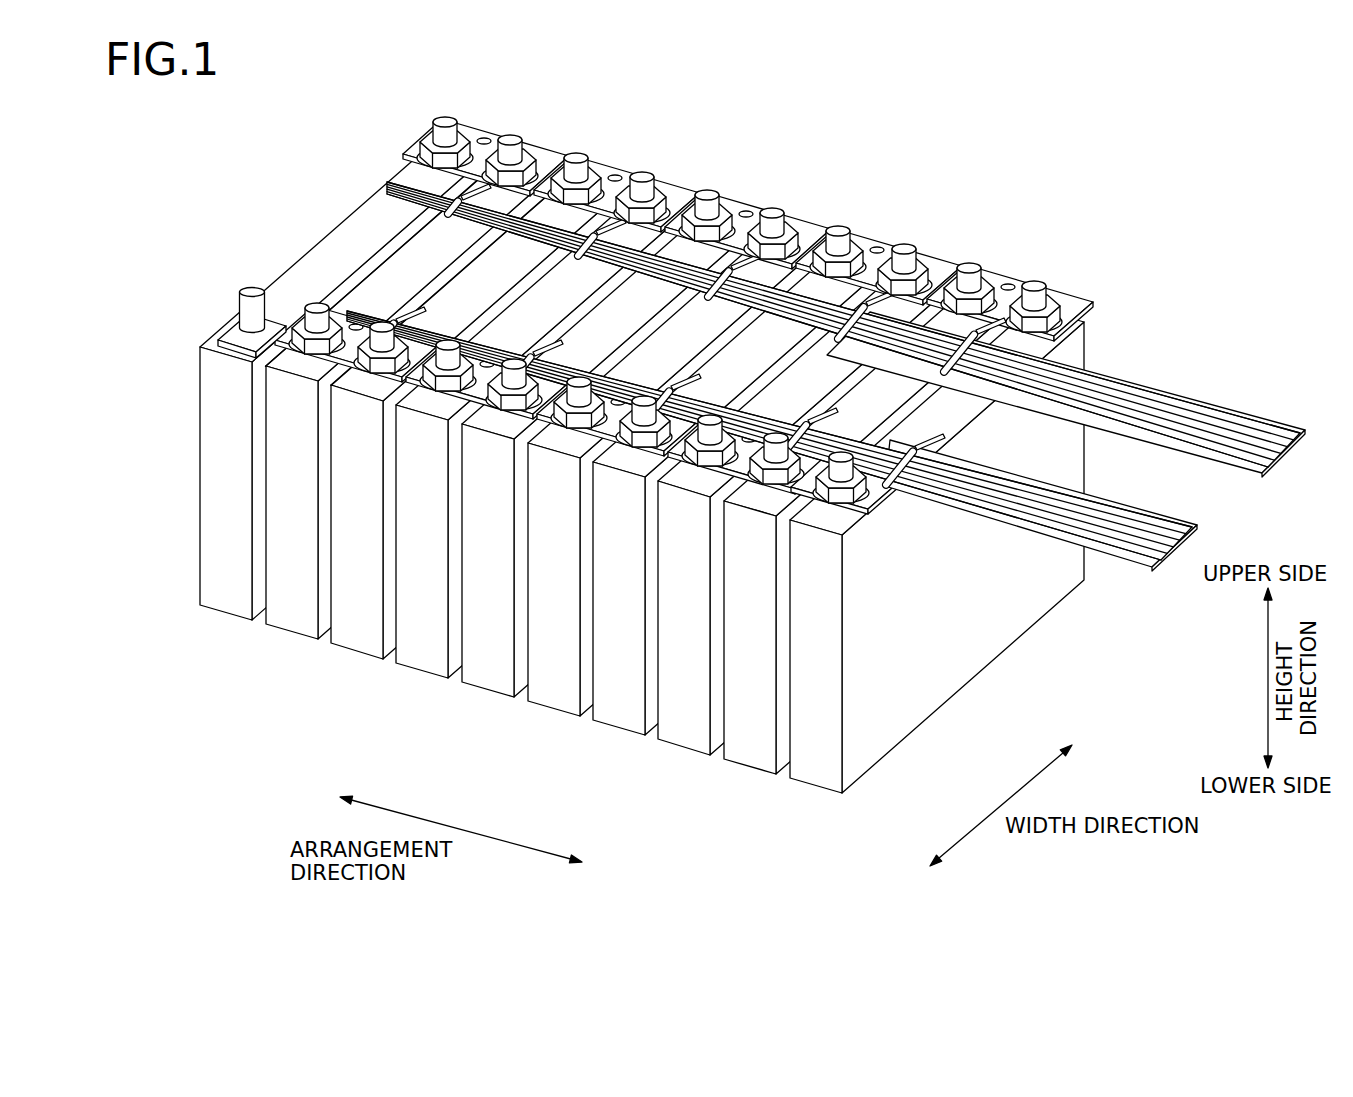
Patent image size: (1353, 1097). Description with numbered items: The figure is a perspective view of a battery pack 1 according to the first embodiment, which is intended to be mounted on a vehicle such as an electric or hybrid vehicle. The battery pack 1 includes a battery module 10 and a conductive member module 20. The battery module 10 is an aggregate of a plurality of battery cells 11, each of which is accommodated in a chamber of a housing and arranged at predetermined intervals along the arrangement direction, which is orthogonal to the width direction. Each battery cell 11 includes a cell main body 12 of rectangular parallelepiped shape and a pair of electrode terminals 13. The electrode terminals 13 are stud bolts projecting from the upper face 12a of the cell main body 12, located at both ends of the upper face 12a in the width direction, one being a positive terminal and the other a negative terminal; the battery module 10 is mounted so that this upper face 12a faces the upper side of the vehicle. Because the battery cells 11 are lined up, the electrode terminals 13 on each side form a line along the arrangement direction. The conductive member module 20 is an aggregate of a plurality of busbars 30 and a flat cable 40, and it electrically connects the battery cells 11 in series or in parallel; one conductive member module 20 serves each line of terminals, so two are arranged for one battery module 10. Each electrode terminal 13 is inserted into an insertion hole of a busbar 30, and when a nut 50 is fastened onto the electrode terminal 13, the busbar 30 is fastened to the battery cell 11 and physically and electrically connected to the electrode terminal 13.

The battery pack 1 is at (708, 451).
The battery module 10 is at (602, 469).
The battery cell 11 is at (598, 484).
The cell main body 12 is at (220, 529).
The upper face 12a is at (468, 302).
The electrode terminal 13 is at (922, 70).
The conductive member module 20 is at (826, 447).
The busbar 30 is at (684, 324).
The flat cable 40 is at (1066, 469).
The nut 50 is at (684, 286).